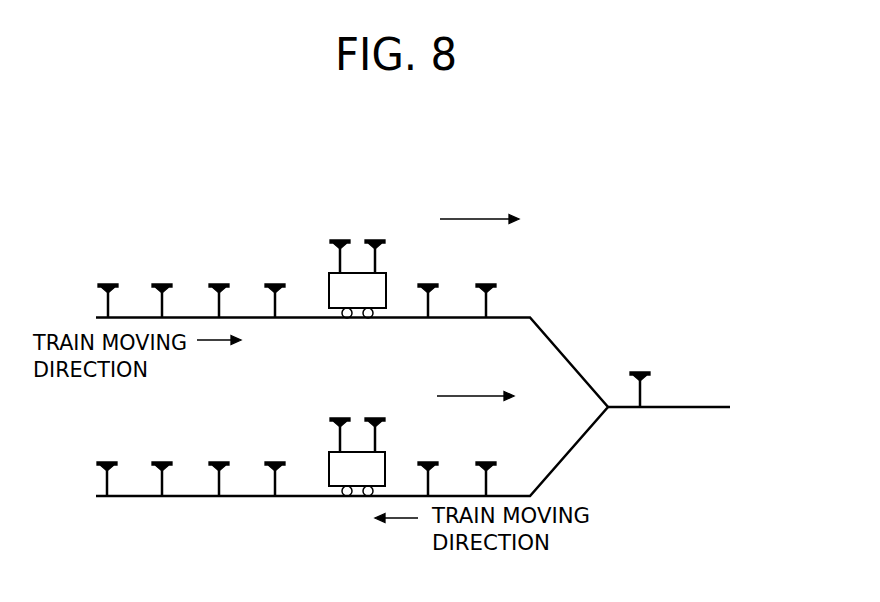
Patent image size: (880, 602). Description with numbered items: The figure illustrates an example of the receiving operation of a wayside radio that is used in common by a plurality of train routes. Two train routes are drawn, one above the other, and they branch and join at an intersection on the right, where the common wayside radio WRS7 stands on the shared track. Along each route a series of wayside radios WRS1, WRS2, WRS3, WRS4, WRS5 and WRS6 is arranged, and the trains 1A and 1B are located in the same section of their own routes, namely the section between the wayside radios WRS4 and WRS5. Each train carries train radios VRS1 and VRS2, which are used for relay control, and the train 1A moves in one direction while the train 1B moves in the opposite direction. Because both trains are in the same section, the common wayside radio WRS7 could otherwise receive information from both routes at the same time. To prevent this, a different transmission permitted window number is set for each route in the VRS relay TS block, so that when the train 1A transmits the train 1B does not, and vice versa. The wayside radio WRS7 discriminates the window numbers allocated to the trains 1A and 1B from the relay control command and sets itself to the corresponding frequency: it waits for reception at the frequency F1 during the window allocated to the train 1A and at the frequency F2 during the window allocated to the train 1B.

The train 1A is at (328, 309).
The train 1B is at (328, 487).
The wayside radio WRS1 is at (112, 373).
The wayside radio WRS2 is at (168, 373).
The wayside radio WRS3 is at (224, 373).
The wayside radio WRS4 is at (280, 373).
The wayside radio WRS5 is at (433, 373).
The wayside radio WRS6 is at (493, 373).
The common wayside radio WRS7 is at (636, 377).
The train radio VRS1 is at (357, 333).
The train radio VRS2 is at (362, 333).
The frequency F1 is at (500, 221).
The frequency F2 is at (496, 398).